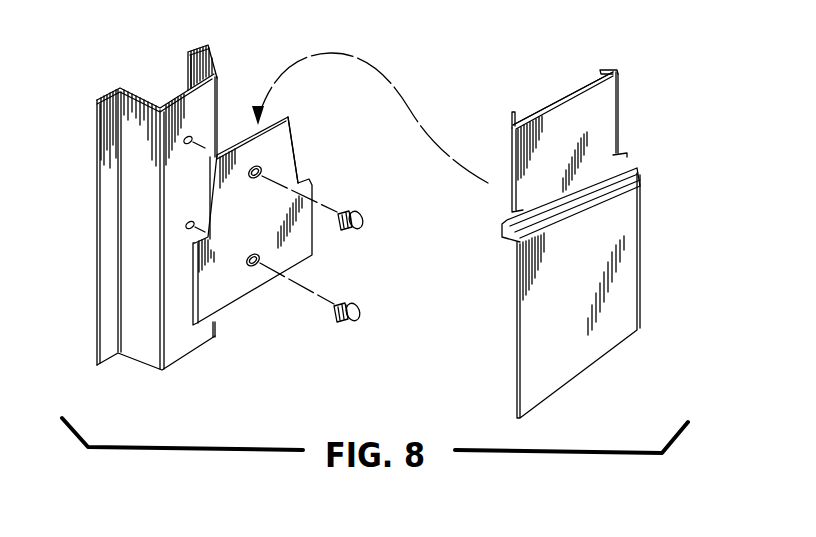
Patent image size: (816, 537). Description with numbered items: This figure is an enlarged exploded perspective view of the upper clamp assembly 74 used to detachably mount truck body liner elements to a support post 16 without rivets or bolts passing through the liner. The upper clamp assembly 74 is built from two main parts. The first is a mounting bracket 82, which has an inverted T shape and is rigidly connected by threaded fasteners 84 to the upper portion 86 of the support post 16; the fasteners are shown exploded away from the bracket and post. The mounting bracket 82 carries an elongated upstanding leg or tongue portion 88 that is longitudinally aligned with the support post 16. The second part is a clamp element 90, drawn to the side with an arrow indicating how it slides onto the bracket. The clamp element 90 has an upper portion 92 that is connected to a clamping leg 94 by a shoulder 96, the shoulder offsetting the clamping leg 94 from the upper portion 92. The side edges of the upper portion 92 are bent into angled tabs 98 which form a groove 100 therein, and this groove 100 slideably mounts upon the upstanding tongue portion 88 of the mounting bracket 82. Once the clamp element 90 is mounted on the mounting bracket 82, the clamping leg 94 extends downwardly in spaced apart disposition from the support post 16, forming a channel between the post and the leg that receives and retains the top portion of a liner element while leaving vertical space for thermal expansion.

The support post 16 is at (95, 313).
The upper clamp assembly 74 is at (506, 76).
The mounting bracket 82 is at (245, 298).
The threaded fasteners 84 is at (350, 212).
The upper portion of support post 86 is at (133, 110).
The tongue portion 88 is at (282, 147).
The clamp element 90 is at (618, 117).
The upper portion of clamp element 92 is at (603, 97).
The clamping leg 94 is at (633, 310).
The shoulder 96 is at (633, 165).
The angled tabs 98 is at (511, 118).
The groove 100 is at (543, 102).